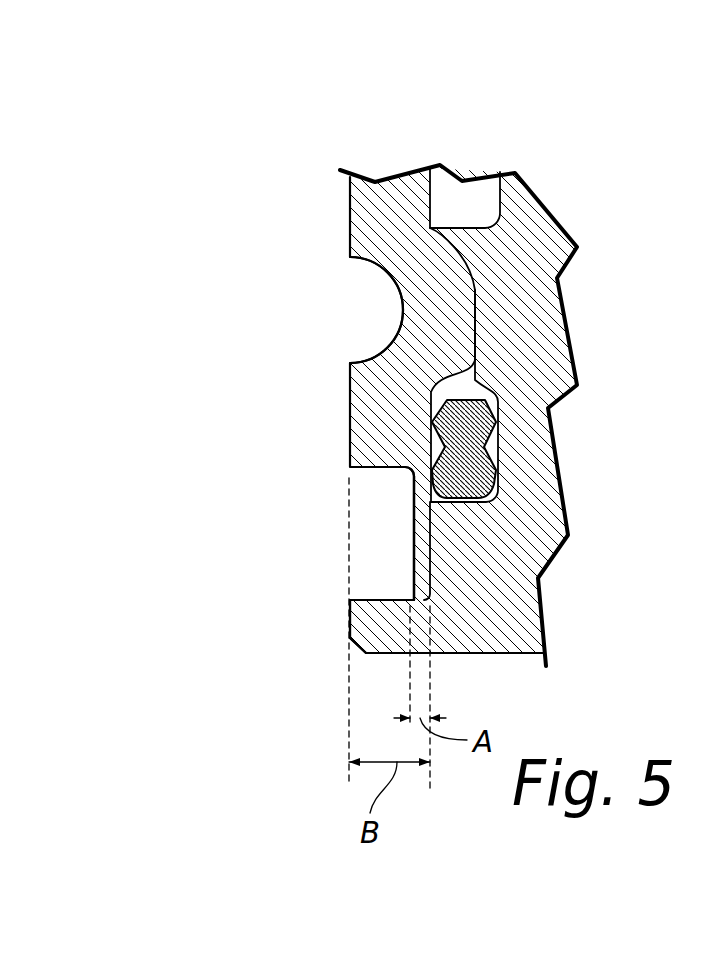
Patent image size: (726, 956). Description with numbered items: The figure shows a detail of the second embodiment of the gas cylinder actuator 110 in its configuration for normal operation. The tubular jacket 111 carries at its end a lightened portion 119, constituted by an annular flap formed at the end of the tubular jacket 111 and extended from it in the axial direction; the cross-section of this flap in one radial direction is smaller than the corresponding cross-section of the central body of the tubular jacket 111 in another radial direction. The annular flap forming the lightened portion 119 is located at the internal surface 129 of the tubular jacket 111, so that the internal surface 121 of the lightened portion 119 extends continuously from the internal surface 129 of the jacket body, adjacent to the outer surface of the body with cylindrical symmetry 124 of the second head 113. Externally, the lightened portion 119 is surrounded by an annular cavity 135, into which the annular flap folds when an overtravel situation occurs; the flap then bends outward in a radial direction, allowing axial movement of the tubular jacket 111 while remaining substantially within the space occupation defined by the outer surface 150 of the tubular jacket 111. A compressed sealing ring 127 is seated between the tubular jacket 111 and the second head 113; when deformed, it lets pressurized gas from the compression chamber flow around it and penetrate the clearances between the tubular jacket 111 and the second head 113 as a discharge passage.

The gas cylinder actuator 110 is at (311, 177).
The tubular jacket 111 is at (400, 198).
The second head 113 is at (560, 206).
The lightened portion 119 is at (415, 550).
The internal surface of the lightened portion 121 is at (413, 528).
The body with cylindrical symmetry 124 is at (535, 428).
The sealing ring 127 is at (470, 413).
The internal surface of the tubular jacket 129 is at (437, 207).
The annular cavity 135 is at (367, 572).
The outer surface of the tubular jacket 150 is at (349, 383).